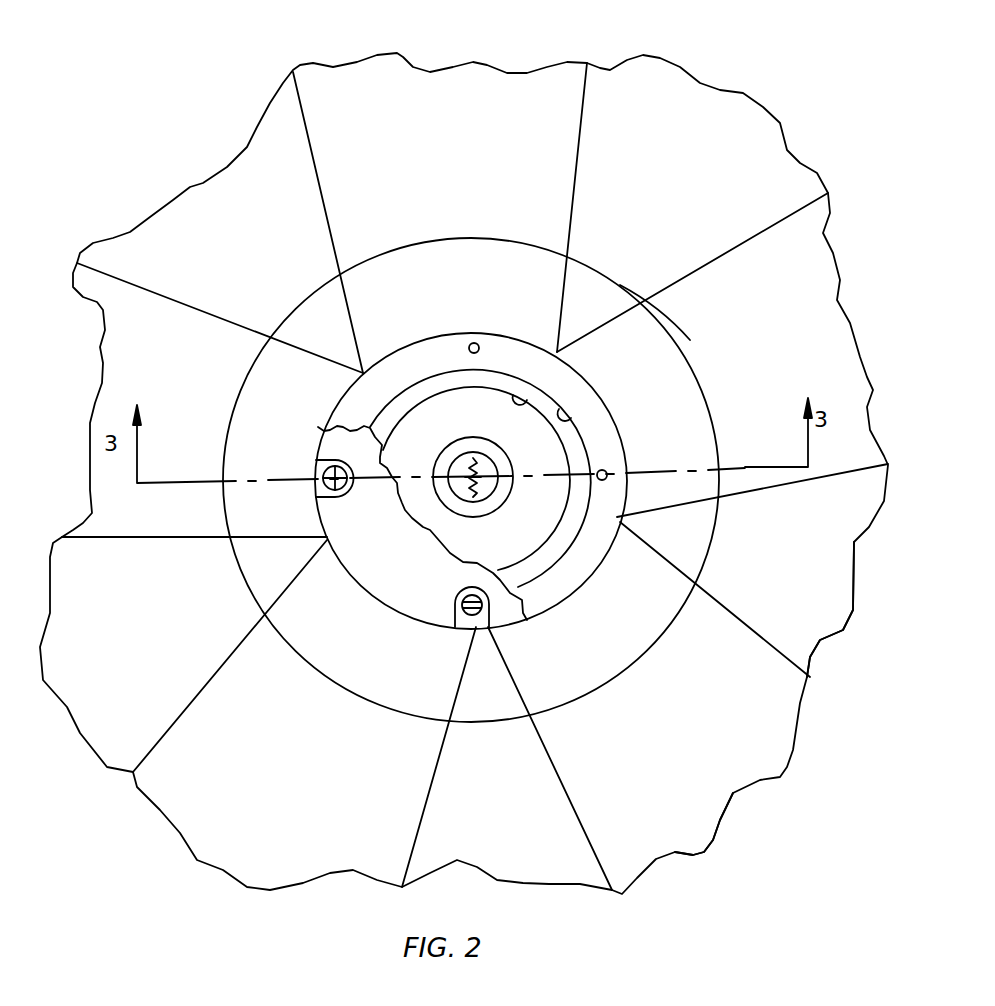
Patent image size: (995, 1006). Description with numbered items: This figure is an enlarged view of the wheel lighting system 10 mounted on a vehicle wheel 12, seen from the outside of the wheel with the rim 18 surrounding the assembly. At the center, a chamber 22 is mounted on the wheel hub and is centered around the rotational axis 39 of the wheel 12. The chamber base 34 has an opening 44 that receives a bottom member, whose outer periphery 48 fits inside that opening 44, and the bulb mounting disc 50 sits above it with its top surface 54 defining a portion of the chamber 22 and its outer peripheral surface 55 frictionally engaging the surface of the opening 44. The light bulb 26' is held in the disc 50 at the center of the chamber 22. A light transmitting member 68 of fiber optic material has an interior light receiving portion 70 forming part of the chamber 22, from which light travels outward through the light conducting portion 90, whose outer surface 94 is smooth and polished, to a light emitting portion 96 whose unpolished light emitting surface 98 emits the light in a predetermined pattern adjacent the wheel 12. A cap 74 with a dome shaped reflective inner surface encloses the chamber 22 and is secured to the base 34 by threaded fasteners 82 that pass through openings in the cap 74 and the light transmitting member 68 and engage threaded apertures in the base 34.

The wheel lighting system 10 is at (688, 663).
The vehicle wheel 12 is at (700, 840).
The rim 18 is at (826, 620).
The chamber 22 is at (472, 413).
The bearing surface 26' is at (253, 300).
The chamber base 34 is at (605, 435).
The rotational axis 39 is at (488, 484).
The opening 44 is at (577, 420).
The outer periphery 48 is at (613, 532).
The bulb mounting disc 50 is at (452, 443).
The top surface 54 is at (497, 413).
The outer peripheral surface 55 is at (590, 457).
The light transmitting member 68 is at (358, 653).
The light receiving portion 70 is at (530, 405).
The cap 74 is at (363, 553).
The threaded fasteners 82 is at (318, 487).
The light conducting portion 90 is at (540, 270).
The outer surface 94 is at (437, 273).
The light emitting portion 96 is at (645, 297).
The light emitting surface 98 is at (557, 352).